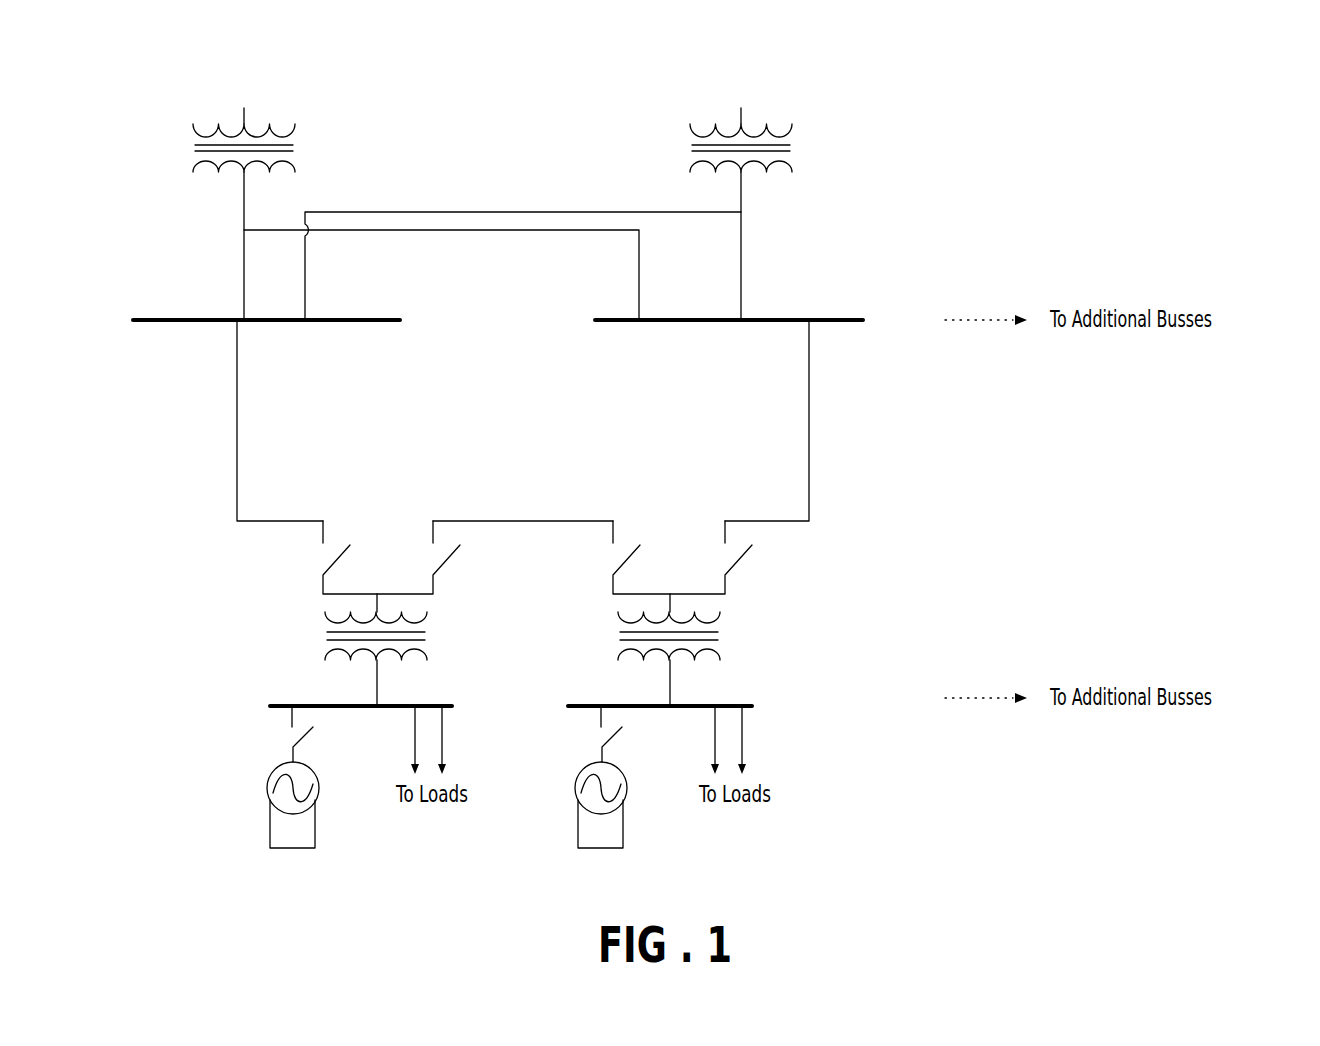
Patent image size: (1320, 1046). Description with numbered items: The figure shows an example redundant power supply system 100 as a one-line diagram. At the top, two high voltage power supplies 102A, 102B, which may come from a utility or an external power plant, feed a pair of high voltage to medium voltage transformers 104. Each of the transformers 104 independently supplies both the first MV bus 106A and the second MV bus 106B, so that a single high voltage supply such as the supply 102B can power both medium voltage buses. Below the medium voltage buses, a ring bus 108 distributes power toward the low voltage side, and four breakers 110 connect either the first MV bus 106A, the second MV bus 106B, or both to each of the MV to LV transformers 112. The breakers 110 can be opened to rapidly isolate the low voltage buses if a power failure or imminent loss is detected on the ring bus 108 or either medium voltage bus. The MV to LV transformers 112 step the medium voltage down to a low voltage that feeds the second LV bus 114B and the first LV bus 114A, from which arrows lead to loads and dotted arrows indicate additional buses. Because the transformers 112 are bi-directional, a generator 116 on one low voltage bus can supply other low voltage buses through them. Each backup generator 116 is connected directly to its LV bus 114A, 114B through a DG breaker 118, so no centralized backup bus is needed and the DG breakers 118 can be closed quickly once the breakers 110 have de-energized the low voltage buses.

The redundant power supply system 100 is at (1246, 185).
The high voltage power supply 102A is at (740, 83).
The high voltage power supply 102B is at (247, 83).
The high voltage to medium voltage transformers 104 is at (690, 157).
The MV bus 1 106A is at (760, 319).
The MV bus 2 106B is at (340, 318).
The ring bus 108 is at (747, 471).
The breakers 110 is at (537, 550).
The MV to LV transformers 112 is at (817, 628).
The LV bus 1 114A is at (728, 706).
The LV bus 2 114B is at (408, 704).
The generator 116 is at (447, 836).
The DG breakers 118 is at (385, 743).